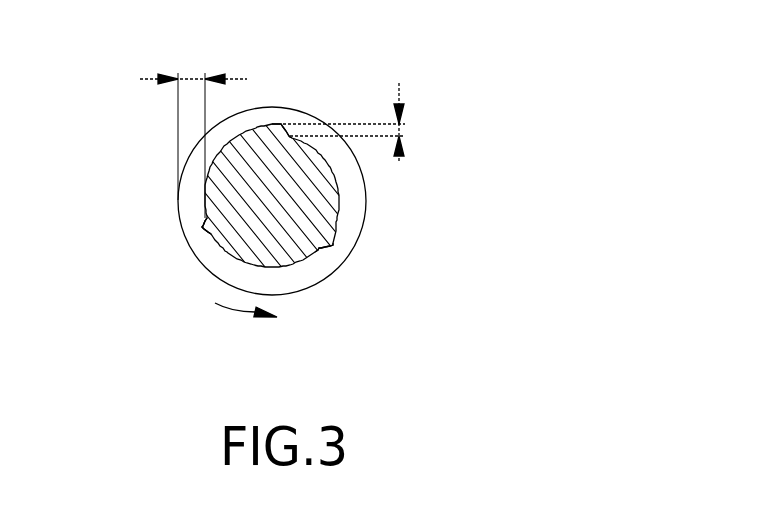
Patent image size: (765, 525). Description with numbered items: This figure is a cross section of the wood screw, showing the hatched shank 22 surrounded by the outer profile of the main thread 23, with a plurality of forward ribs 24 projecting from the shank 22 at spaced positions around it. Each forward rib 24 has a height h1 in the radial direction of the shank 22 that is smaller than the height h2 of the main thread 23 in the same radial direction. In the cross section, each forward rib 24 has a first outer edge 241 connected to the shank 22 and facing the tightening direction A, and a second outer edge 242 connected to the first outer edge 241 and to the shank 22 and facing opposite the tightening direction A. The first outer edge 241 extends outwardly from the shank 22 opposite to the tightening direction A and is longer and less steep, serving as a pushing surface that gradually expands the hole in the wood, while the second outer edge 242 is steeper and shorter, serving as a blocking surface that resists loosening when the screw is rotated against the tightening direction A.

The shank 22 is at (363, 205).
The main thread 23 is at (298, 282).
The forward rib 24 is at (284, 103).
The first outer edge 241 is at (209, 234).
The second outer edge 242 is at (206, 218).
The height of forward rib h1 is at (362, 122).
The height of main thread h2 is at (193, 126).
The tightening direction A is at (246, 335).